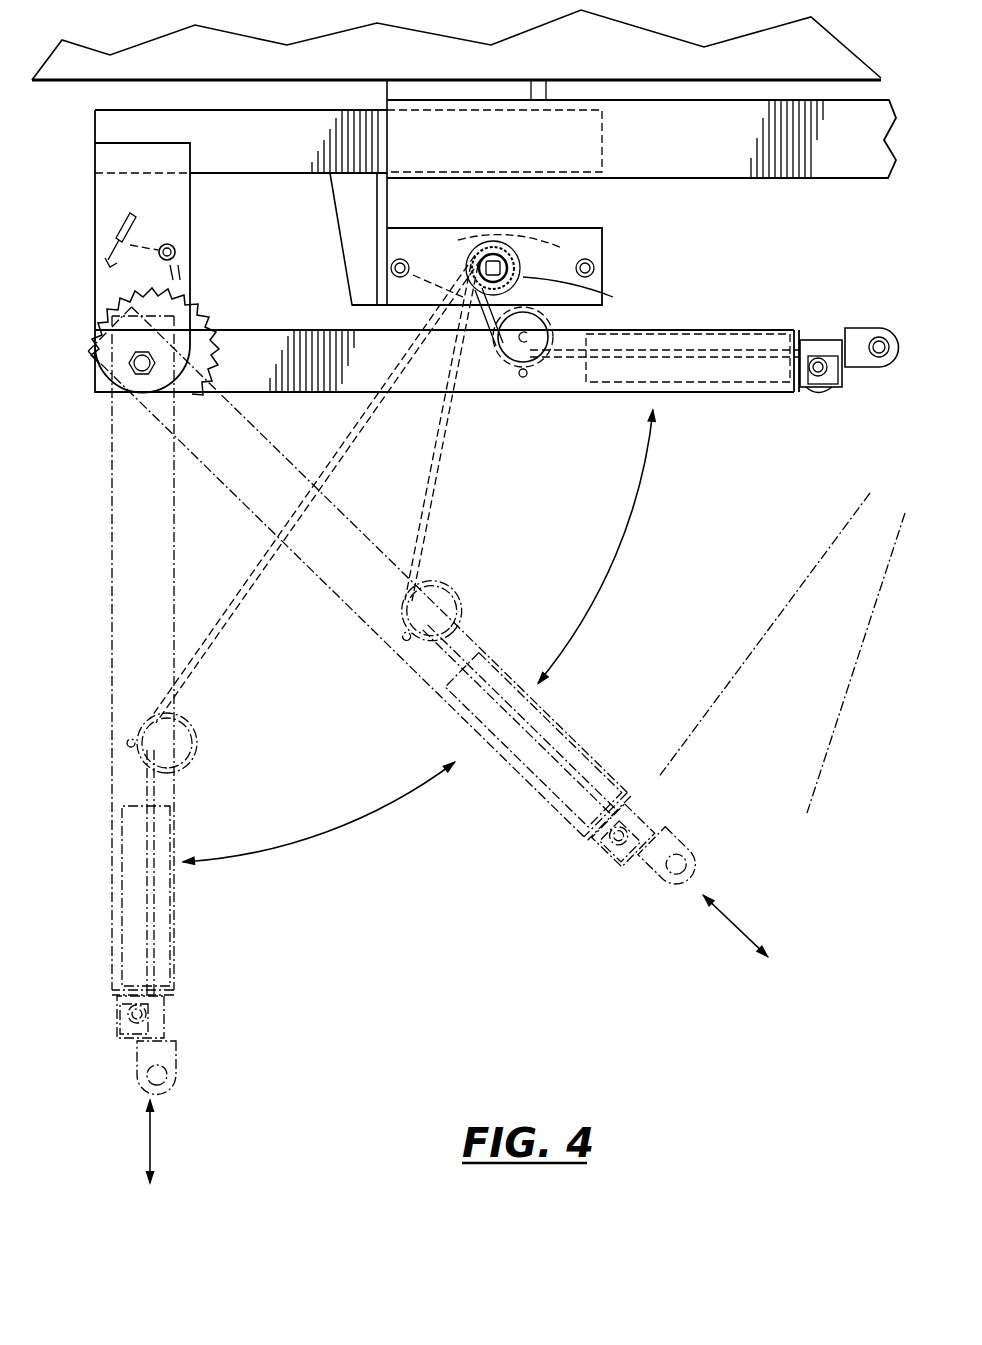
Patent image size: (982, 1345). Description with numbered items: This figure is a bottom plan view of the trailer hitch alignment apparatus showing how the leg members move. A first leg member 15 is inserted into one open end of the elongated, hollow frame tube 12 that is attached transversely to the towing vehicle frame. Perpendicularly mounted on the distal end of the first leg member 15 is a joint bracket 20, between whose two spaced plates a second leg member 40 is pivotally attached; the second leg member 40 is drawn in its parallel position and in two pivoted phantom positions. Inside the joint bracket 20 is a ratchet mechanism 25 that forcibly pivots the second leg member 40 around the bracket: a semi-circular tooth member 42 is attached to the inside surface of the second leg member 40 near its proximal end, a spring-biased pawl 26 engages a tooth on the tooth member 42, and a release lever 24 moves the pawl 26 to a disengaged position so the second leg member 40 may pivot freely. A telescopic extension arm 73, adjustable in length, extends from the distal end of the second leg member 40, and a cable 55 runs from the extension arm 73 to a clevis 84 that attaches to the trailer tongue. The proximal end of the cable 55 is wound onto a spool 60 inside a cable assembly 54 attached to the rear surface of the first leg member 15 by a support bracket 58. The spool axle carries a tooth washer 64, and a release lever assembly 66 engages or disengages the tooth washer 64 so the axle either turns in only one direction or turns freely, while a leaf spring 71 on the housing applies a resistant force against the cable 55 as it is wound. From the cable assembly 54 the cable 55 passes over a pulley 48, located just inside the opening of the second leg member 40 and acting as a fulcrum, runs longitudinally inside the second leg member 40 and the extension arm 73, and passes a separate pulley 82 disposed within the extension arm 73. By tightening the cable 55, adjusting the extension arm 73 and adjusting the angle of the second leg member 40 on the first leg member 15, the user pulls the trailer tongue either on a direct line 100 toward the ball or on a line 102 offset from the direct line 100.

The frame tube 12 is at (682, 158).
The first leg member 15 is at (262, 155).
The joint bracket 20 is at (178, 207).
The release lever 24 is at (120, 240).
The ratchet mechanism 25 is at (196, 292).
The pawl 26 is at (178, 264).
The second leg member 40 is at (723, 329).
The semi-circular tooth member 42 is at (207, 318).
The pulley 48 is at (512, 368).
The cable assembly 54 is at (611, 241).
The cable 55 is at (443, 443).
The support bracket 58 is at (362, 228).
The spool 60 is at (496, 244).
The tooth washer 64 is at (607, 297).
The release lever assembly 66 is at (423, 273).
The leaf spring 71 is at (568, 250).
The telescopic extension arm 73 is at (811, 338).
The pulley 82 is at (829, 392).
The clevis 84 is at (855, 328).
The direct line 100 is at (766, 634).
The offset line 102 is at (833, 733).